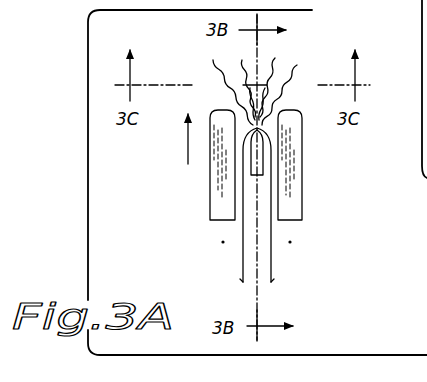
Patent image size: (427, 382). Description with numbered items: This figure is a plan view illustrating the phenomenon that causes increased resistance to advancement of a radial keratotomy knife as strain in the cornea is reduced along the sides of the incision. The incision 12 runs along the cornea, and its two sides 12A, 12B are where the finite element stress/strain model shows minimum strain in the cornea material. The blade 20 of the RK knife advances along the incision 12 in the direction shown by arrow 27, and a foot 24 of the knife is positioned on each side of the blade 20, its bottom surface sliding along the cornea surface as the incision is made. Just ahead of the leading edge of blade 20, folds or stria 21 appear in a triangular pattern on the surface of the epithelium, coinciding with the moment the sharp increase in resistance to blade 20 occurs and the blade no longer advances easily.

The incision 12 is at (276, 262).
The side of incision 12A is at (290, 242).
The side of incision 12B is at (223, 242).
The blade 20 is at (263, 165).
The foot 24 is at (215, 188).
The stria 21 is at (209, 70).
The arrow 27 is at (188, 136).